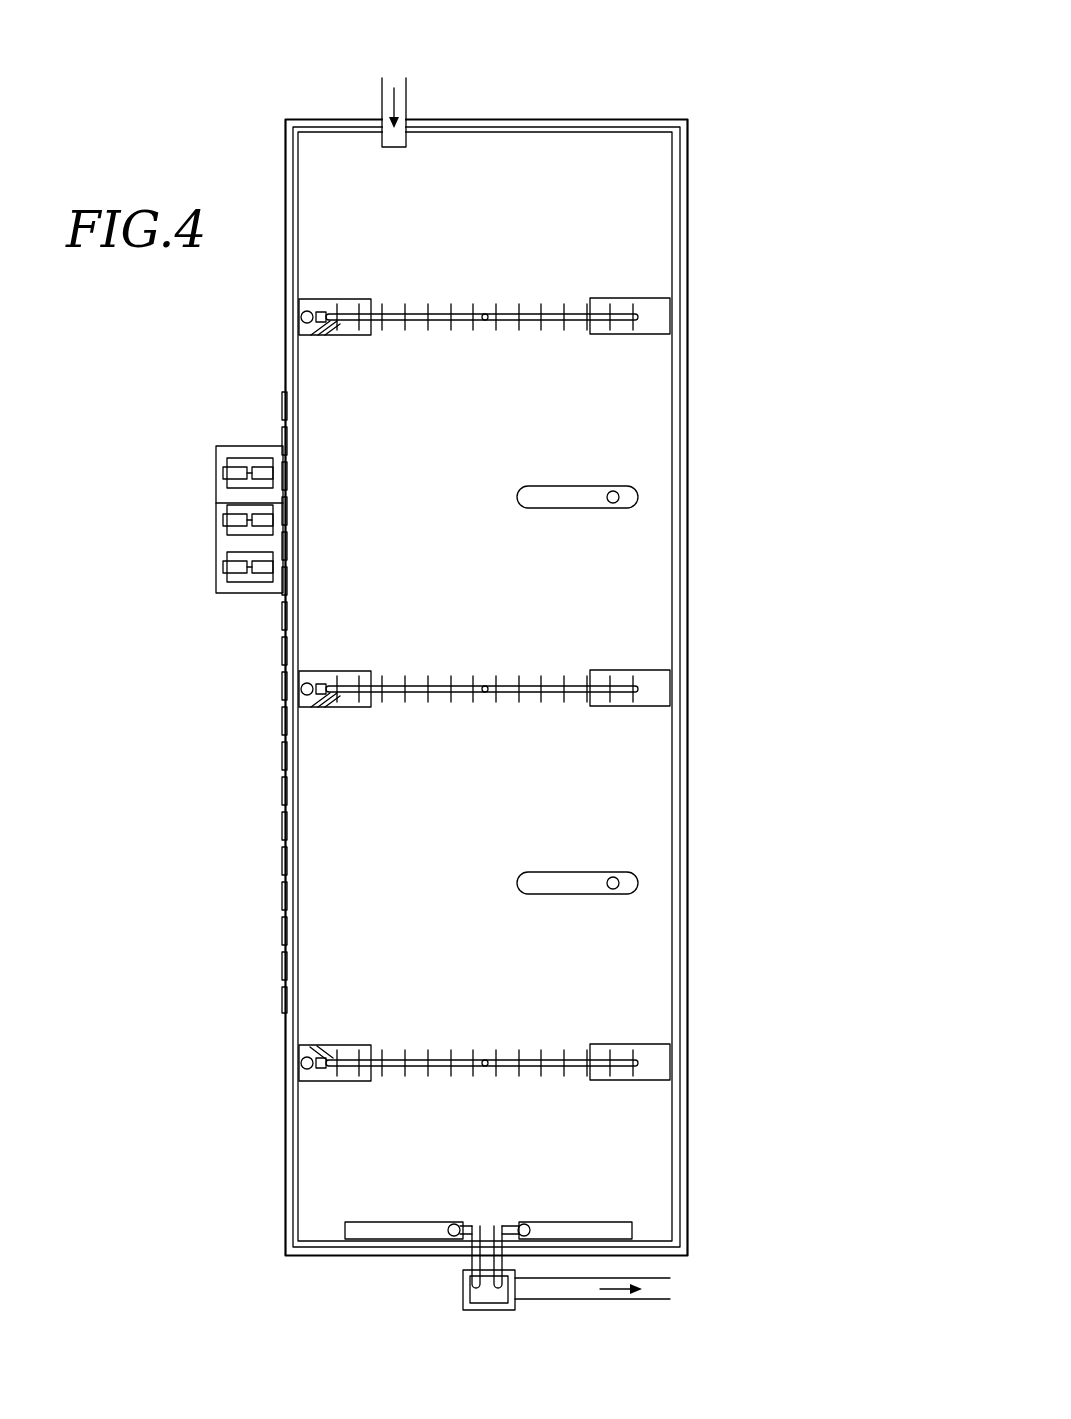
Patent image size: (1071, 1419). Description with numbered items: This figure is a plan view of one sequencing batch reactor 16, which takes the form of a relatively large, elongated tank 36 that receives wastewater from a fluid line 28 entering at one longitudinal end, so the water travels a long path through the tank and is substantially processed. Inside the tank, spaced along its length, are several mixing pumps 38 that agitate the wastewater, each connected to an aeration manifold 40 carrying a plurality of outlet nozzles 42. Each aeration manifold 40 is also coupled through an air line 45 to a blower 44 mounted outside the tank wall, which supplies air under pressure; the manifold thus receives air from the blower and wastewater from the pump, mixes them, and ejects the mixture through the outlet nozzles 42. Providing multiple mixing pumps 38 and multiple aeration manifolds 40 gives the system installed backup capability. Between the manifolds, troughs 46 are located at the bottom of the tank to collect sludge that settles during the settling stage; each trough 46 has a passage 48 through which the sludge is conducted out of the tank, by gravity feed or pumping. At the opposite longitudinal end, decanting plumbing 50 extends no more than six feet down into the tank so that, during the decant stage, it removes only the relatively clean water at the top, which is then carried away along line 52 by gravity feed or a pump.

The sequencing batch reactor 16 is at (309, 70).
The fluid line 28 is at (407, 95).
The tank 36 is at (692, 186).
The mixing pump 38 is at (343, 656).
The aeration manifold 40 is at (498, 640).
The outlet nozzles 42 is at (485, 656).
The blower 44 is at (216, 518).
The air line 45 is at (370, 690).
The trough 46 is at (577, 650).
The passage 48 is at (619, 655).
The decanting plumbing 50 is at (499, 1203).
The line 52 is at (567, 1300).